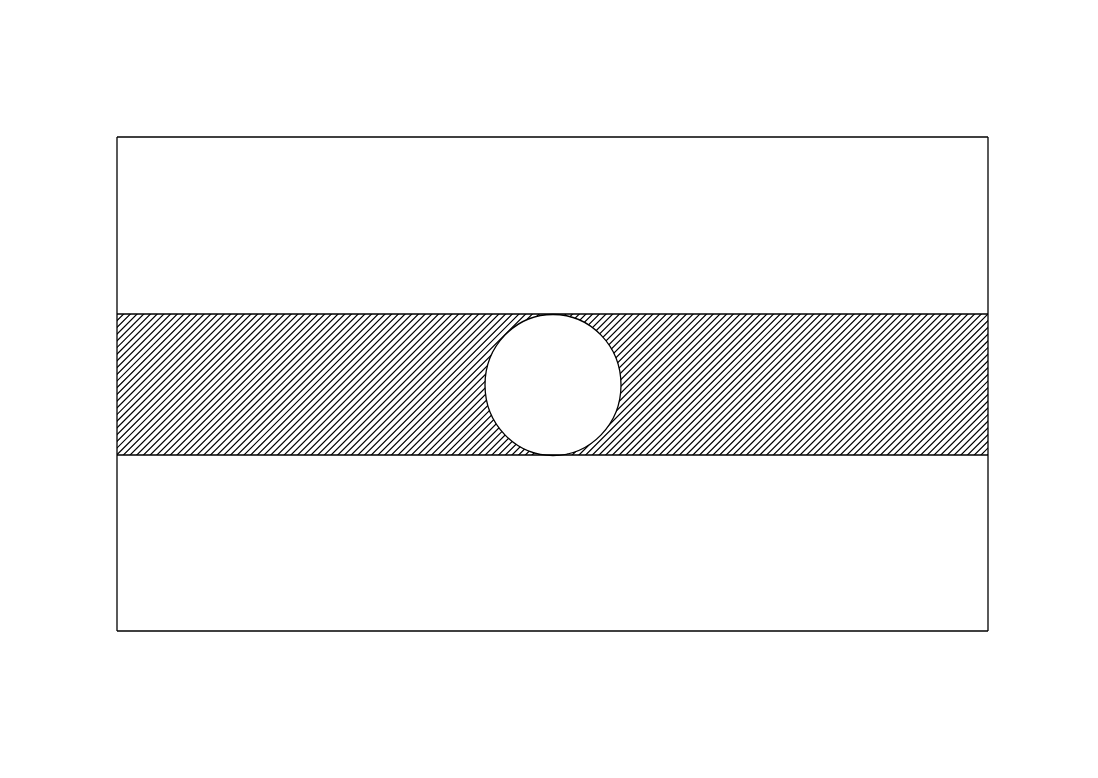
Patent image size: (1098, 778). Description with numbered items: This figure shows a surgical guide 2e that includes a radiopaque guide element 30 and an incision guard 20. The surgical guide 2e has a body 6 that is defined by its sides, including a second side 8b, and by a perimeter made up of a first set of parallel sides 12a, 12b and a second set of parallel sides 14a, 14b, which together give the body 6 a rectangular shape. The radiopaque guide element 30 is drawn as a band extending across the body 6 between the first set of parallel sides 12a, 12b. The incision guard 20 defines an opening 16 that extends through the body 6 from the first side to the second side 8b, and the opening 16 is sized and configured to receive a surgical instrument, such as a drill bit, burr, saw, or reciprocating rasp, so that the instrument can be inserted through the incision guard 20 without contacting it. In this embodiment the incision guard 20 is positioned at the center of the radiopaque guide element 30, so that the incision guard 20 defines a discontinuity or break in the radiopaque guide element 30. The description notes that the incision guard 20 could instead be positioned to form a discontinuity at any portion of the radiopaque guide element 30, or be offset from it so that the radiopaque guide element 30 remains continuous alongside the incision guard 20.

The surgical guide 2e is at (800, 125).
The body 6 is at (989, 192).
The second side 8b is at (947, 238).
The first parallel side 12a is at (117, 216).
The first parallel side 12b is at (989, 553).
The second parallel side 14a is at (202, 136).
The second parallel side 14b is at (242, 632).
The opening 16 is at (580, 357).
The incision guard 20 is at (548, 313).
The radiopaque guide element 30 is at (948, 370).